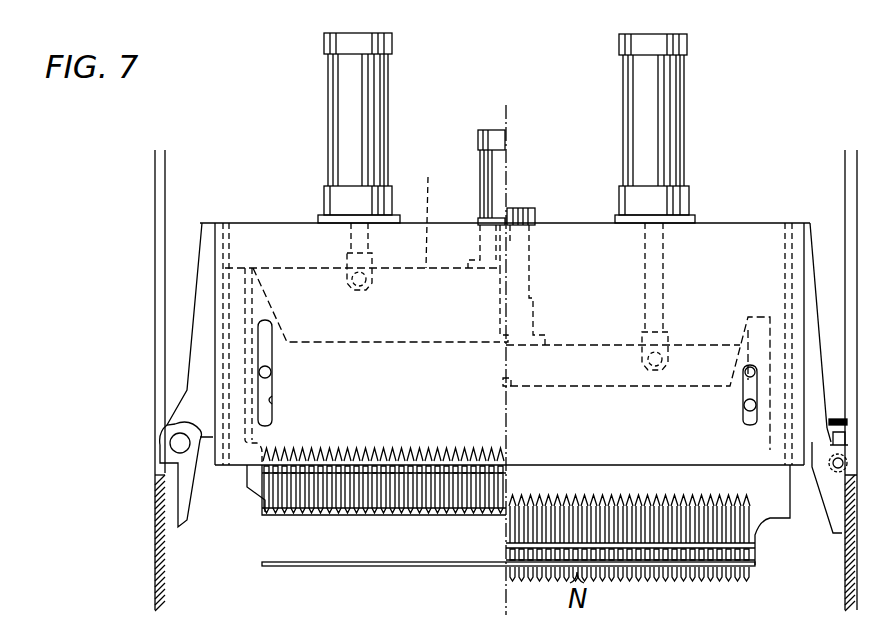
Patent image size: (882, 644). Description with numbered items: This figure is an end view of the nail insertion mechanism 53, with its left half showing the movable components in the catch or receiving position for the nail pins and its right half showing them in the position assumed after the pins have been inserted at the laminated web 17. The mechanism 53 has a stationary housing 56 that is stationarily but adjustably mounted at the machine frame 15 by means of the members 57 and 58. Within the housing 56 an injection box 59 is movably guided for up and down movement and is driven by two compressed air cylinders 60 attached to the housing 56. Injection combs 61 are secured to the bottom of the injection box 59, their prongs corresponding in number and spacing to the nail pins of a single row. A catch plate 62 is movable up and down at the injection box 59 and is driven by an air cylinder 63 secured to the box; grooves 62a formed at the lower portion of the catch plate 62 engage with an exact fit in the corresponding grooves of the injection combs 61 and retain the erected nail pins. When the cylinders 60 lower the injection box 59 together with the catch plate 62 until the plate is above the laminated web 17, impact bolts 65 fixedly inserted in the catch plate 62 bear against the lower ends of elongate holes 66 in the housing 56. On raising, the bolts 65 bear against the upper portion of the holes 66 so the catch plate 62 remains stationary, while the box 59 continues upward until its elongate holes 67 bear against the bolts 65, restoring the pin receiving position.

The machine frame 15 is at (157, 545).
The laminated web 17 is at (396, 563).
The nail insertion mechanism 53 is at (296, 214).
The stationary housing 56 is at (261, 232).
The mounting member 57 is at (200, 366).
The mounting member 58 is at (808, 400).
The injection box 59 is at (497, 299).
The compressed air cylinders 60 is at (370, 90).
The injection combs 61 is at (344, 470).
The catch plate 62 is at (262, 488).
The grooves 62a is at (298, 492).
The air cylinder 63 is at (519, 208).
The impact bolts 65 is at (272, 372).
The elongate holes 66 is at (274, 400).
The elongate holes 67 is at (274, 340).